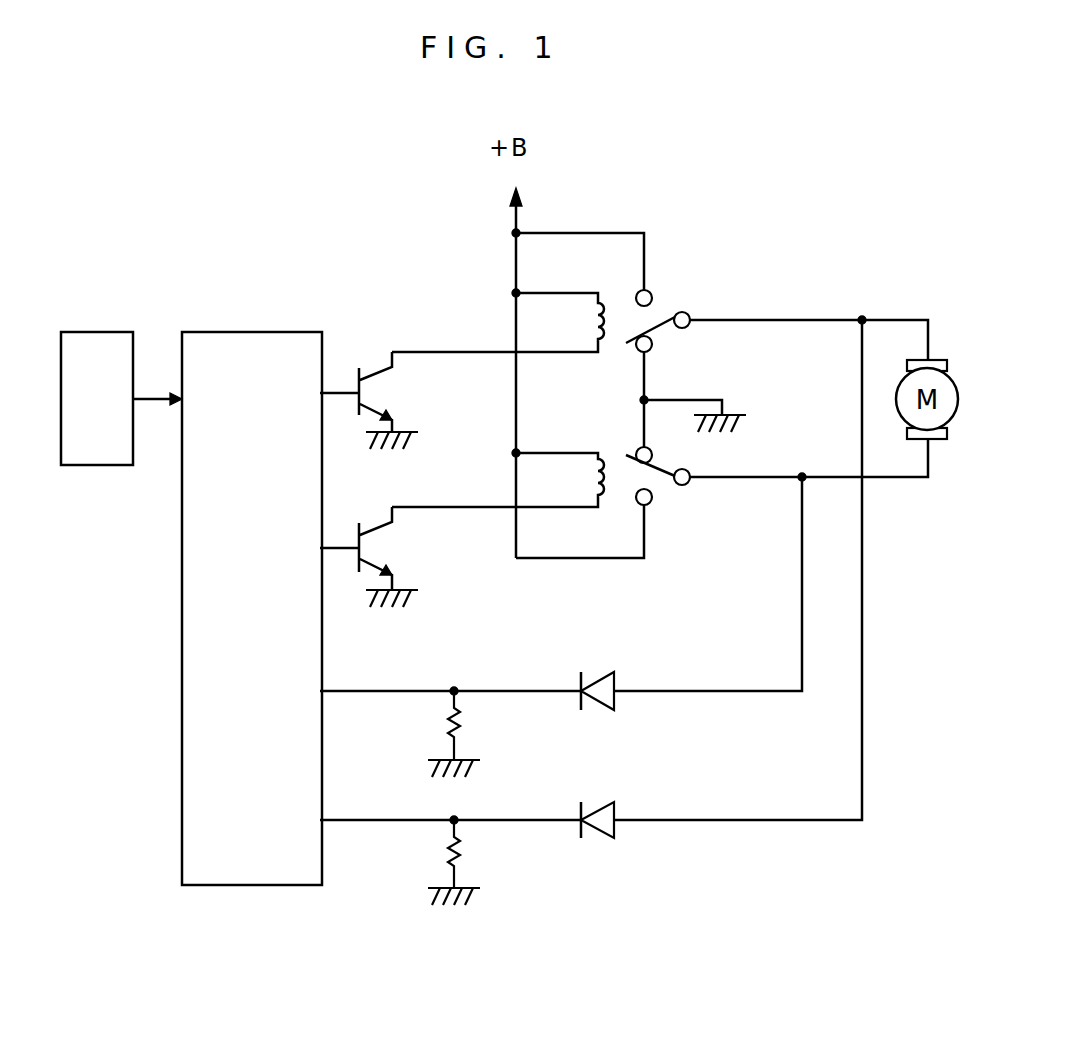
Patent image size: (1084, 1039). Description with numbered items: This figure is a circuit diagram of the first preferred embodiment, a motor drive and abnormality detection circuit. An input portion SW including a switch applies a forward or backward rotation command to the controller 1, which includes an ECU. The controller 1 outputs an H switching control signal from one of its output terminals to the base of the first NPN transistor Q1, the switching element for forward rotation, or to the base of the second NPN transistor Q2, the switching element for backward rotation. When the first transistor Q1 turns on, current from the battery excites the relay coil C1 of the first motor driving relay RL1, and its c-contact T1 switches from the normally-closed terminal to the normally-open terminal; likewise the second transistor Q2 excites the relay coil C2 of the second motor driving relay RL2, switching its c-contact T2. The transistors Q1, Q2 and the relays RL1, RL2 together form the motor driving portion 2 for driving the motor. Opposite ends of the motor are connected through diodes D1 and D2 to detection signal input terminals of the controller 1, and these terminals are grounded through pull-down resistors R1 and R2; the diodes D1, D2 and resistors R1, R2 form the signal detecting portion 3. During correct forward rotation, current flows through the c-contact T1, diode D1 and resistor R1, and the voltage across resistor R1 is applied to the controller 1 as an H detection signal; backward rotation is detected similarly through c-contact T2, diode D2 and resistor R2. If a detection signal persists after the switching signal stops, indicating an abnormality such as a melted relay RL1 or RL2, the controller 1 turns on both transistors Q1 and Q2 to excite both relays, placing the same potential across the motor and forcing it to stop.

The input portion SW is at (97, 330).
The controller 1 is at (241, 330).
The motor driving portion 2 is at (566, 403).
The signal detecting portion 3 is at (591, 646).
The first NPN transistor Q1 is at (395, 408).
The second NPN transistor Q2 is at (397, 563).
The relay coil C1 is at (585, 315).
The relay coil C2 is at (592, 470).
The first motor driving relay RL1 is at (719, 337).
The second motor driving relay RL2 is at (697, 532).
The c-contact T1 is at (678, 344).
The c-contact T2 is at (663, 493).
The diode D1 is at (615, 832).
The diode D2 is at (615, 703).
The pull-down resistor R1 is at (450, 853).
The pull-down resistor R2 is at (450, 725).